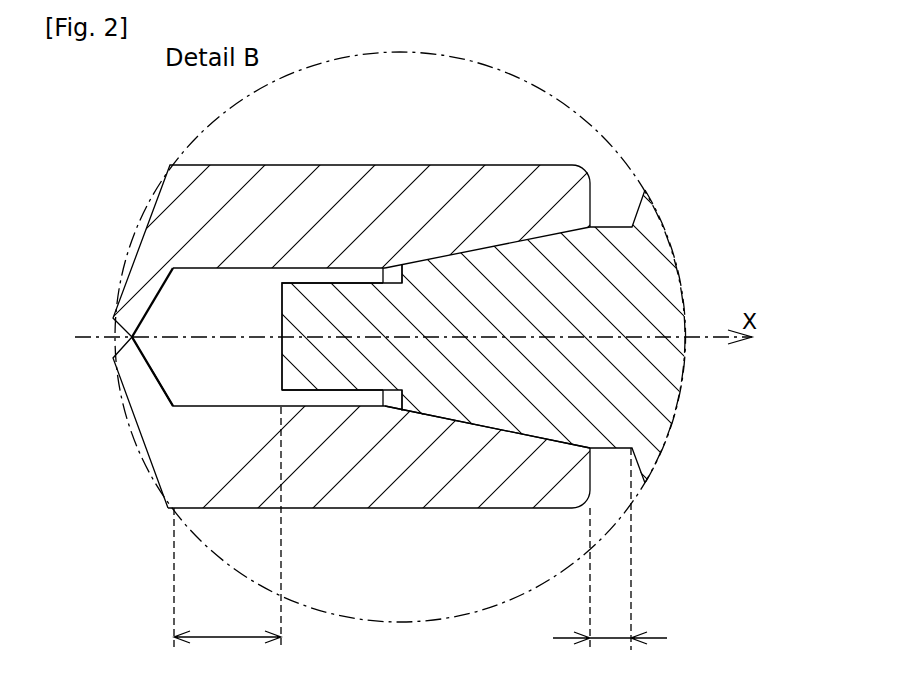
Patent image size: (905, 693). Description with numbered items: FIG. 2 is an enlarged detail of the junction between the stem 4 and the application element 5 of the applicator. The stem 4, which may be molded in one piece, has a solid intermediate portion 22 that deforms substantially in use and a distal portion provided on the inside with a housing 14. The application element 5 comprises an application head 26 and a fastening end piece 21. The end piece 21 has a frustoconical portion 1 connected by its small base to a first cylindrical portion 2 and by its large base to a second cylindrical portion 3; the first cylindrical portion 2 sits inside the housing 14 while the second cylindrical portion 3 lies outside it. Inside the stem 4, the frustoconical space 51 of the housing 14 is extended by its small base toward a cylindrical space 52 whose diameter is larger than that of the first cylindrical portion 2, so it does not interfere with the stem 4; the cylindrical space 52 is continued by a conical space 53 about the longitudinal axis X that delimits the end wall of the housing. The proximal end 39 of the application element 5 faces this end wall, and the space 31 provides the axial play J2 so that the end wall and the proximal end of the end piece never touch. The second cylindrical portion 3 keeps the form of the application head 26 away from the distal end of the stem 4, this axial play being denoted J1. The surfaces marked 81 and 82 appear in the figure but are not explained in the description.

The frustoconical portion 1 is at (452, 346).
The first cylindrical portion 2 is at (452, 346).
The second cylindrical portion 3 is at (607, 253).
The stem 4 is at (407, 346).
The application element 5 is at (458, 346).
The housing 14 is at (130, 420).
The fastening end piece 21 is at (481, 220).
The intermediate portion 22 is at (433, 416).
The application head 26 is at (689, 275).
The space 31 is at (233, 233).
The proximal end 39 is at (307, 360).
The frustoconical space 51 is at (503, 431).
The cylindrical space 52 is at (363, 377).
The conical space 53 is at (152, 413).
The first inclined surface 81 is at (150, 352).
The second inclined surface 82 is at (200, 318).
The axial play J1 is at (610, 549).
The axial play J2 is at (227, 527).